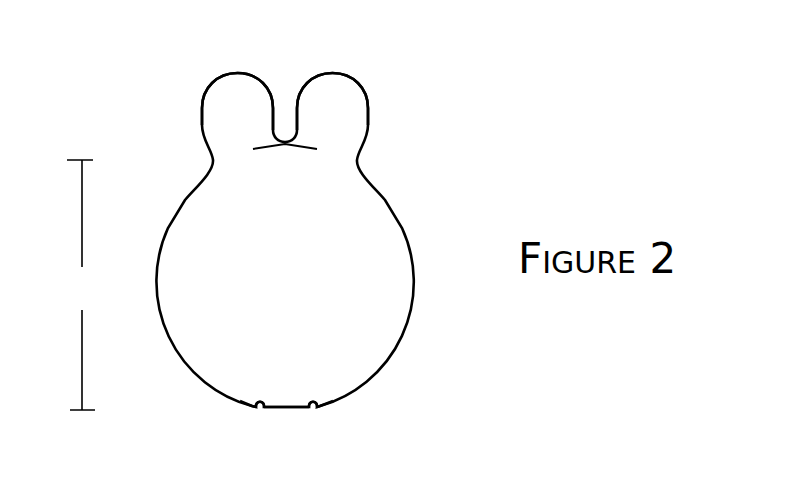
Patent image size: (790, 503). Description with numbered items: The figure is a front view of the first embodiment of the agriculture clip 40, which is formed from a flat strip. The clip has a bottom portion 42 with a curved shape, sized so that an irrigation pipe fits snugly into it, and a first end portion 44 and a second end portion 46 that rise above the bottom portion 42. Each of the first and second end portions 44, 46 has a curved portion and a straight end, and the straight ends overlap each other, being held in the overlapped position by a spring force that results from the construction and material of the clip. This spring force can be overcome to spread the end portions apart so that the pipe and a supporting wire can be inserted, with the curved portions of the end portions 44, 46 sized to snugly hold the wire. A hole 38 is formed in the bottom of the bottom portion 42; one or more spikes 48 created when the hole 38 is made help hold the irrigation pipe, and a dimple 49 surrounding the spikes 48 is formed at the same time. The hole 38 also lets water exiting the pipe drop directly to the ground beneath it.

The agriculture clip 40 is at (550, 49).
The bottom portion 42 is at (82, 285).
The first end portion 44 is at (217, 75).
The second end portion 46 is at (357, 80).
The spikes 48 is at (258, 399).
The hole 38 is at (281, 392).
The dimple 49 is at (250, 408).